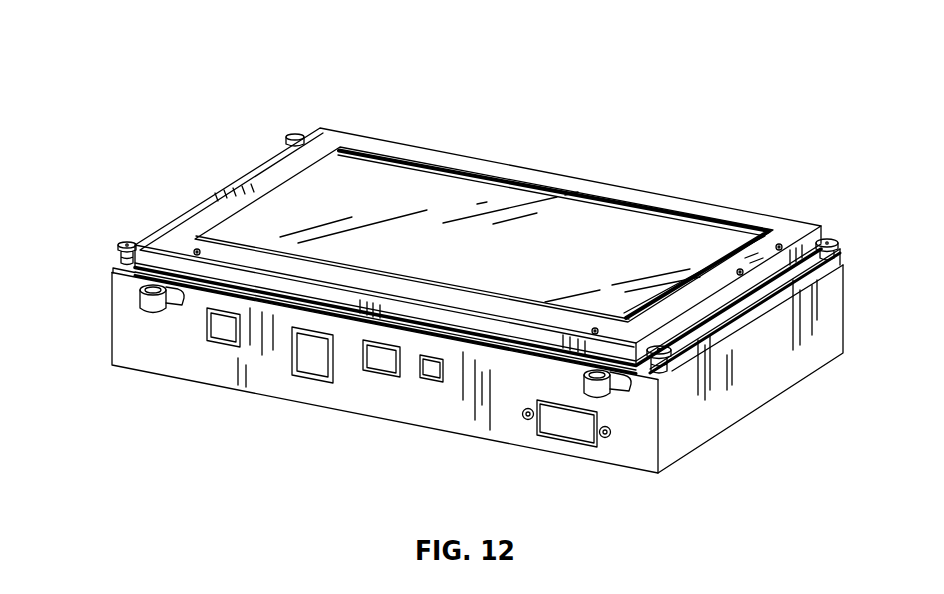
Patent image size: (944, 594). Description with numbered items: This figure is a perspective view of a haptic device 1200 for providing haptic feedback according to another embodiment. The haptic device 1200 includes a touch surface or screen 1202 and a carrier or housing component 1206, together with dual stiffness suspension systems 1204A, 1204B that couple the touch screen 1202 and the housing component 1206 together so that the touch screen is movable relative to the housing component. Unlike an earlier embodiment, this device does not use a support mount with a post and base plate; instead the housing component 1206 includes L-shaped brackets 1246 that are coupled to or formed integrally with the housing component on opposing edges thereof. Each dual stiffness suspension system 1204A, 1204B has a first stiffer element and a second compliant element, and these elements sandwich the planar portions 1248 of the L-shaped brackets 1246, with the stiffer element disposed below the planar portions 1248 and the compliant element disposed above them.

The haptic device 1200 is at (205, 165).
The touch surface or screen 1202 is at (556, 220).
The dual stiffness suspension system 1204A is at (114, 240).
The dual stiffness suspension system 1204B is at (684, 370).
The carrier or housing component 1206 is at (441, 152).
The L-shaped brackets 1246 is at (748, 298).
The planar portions 1248 is at (718, 334).